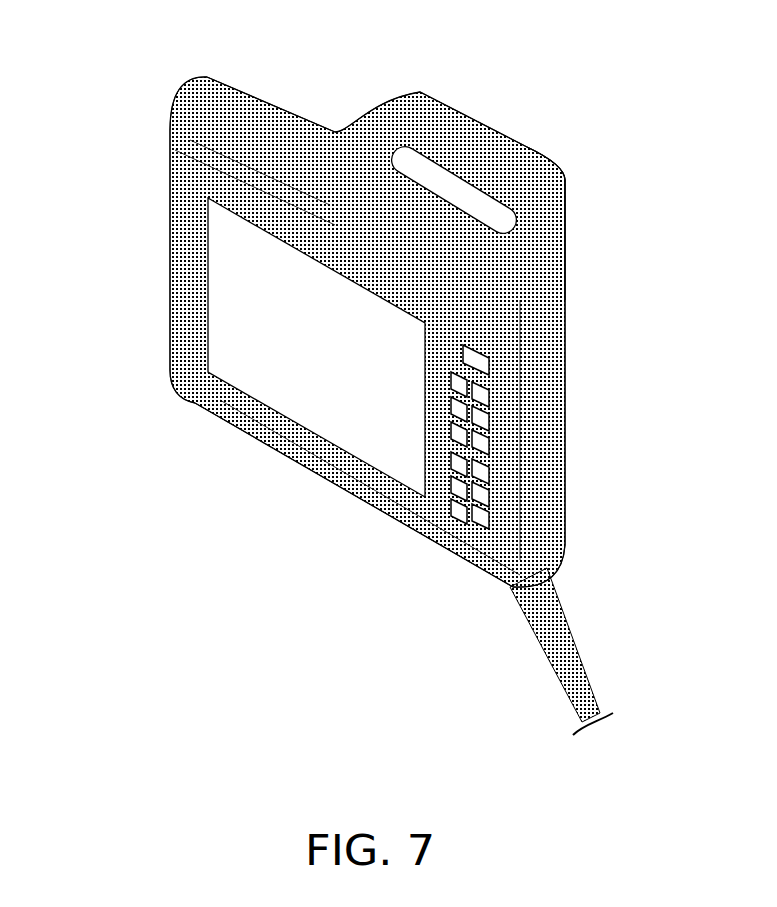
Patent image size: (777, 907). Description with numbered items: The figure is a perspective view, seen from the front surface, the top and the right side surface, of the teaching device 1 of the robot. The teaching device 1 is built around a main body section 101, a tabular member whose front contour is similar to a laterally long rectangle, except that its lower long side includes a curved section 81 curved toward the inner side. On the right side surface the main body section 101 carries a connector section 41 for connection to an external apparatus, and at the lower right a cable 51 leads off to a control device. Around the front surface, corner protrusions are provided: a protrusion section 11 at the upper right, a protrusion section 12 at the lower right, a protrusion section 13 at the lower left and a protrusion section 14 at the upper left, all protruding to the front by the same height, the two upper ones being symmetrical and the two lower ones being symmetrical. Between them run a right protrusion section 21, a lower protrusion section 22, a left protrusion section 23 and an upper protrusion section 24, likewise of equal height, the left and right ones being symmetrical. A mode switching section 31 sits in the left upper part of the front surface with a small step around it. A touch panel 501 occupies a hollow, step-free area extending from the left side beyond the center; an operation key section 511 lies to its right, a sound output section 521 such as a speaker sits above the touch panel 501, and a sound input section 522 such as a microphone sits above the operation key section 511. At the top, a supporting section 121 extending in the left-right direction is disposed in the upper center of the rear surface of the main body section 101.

The teaching device 1 is at (585, 208).
The protrusion section 11 is at (562, 282).
The protrusion section 12 is at (543, 567).
The protrusion section 13 is at (195, 397).
The protrusion section 14 is at (190, 98).
The right protrusion section 21 is at (537, 437).
The lower protrusion section 22 is at (290, 458).
The left protrusion section 23 is at (177, 267).
The upper protrusion section 24 is at (340, 173).
The mode switching section 31 is at (212, 163).
The connector section 41 is at (562, 407).
The cable 51 is at (567, 672).
The curved section 81 is at (342, 482).
The main body section 101 is at (422, 205).
The supporting section 121 is at (527, 153).
The touch panel 501 is at (223, 335).
The operation key section 511 is at (461, 542).
The sound output section 521 is at (278, 173).
The sound input section 522 is at (480, 345).